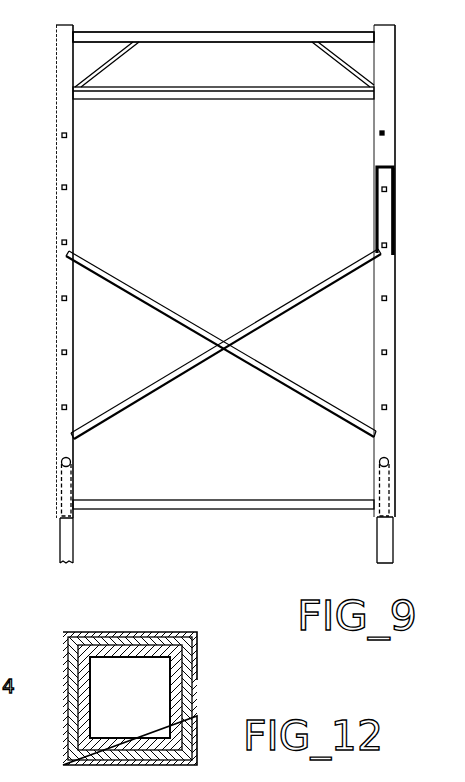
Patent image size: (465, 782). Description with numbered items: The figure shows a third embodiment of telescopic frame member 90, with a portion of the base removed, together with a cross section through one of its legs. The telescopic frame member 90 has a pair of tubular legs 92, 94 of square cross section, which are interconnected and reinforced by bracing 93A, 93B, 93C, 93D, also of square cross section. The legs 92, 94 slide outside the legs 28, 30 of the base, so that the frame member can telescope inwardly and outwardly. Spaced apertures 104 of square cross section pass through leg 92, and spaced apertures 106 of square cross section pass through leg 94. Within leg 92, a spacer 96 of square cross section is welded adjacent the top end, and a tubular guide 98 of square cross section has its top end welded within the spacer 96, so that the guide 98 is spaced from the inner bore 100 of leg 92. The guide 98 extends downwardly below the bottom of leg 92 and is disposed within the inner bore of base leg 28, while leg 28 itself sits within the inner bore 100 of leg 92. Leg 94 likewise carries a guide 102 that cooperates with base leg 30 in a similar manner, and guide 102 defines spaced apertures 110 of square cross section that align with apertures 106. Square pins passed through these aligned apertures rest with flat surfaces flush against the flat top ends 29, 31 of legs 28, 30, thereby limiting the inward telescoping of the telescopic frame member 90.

In FIG. 9, the telescopic frame member 90 is at (46, 329).
In FIG. 9, the bracing 93A is at (193, 42).
In FIG. 9, the bracing 93B is at (210, 99).
In FIG. 9, the bracing 93C is at (114, 60).
In FIG. 9, the bracing 93D is at (338, 72).
In FIG. 9, the leg 94 is at (382, 121).
In FIG. 9, the spaced apertures 104 is at (67, 135).
In FIG. 9, the spaced apertures 106 is at (387, 298).
In FIG. 9, the guide 102 is at (388, 214).
In FIG. 9, the spaced apertures 110 is at (389, 197).
In FIG. 9, the leg 92 is at (74, 388).
In FIG. 12, the leg 92 is at (128, 636).
In FIG. 9, the flat top end 29 is at (73, 473).
In FIG. 9, the flat top end 31 is at (378, 466).
In FIG. 9, the leg 28 is at (75, 551).
In FIG. 9, the leg 30 is at (375, 552).
In FIG. 12, the inner bore 100 is at (95, 640).
In FIG. 12, the spacer 96 is at (172, 645).
In FIG. 12, the tubular guide 98 is at (176, 670).